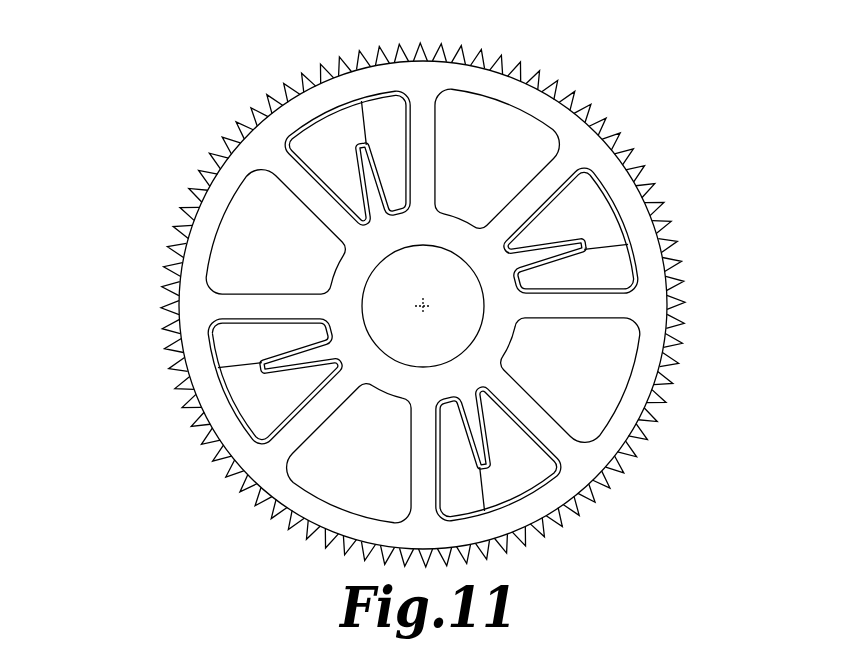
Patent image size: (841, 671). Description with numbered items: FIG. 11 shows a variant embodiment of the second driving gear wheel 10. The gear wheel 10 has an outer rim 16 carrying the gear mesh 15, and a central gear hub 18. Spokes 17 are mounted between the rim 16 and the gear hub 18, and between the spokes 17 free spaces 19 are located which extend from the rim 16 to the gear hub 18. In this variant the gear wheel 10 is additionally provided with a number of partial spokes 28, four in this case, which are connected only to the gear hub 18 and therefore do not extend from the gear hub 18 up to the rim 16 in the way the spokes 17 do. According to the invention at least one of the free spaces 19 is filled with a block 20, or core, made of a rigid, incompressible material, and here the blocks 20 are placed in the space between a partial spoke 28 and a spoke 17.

The driving gear wheel 10 is at (139, 105).
The gear mesh 15 is at (247, 113).
The rim 16 is at (213, 173).
The spokes 17 is at (313, 198).
The gear hub 18 is at (378, 373).
The free spaces 19 is at (590, 411).
The block 20 is at (572, 210).
The partial spokes 28 is at (357, 145).